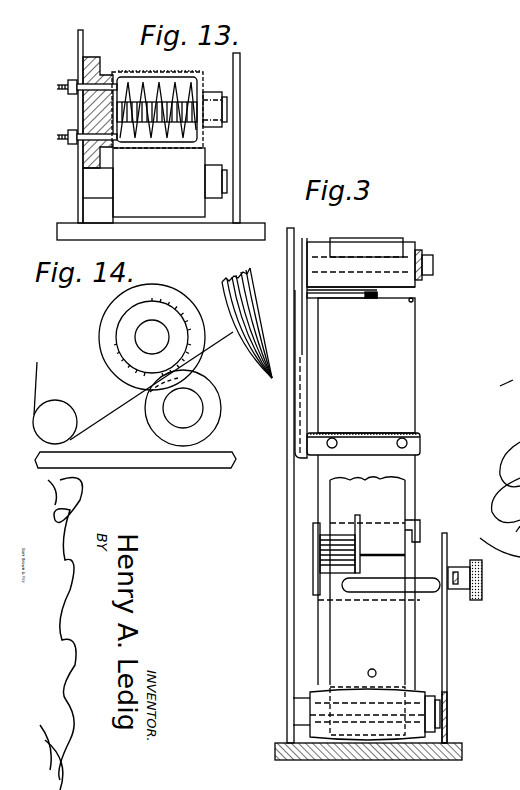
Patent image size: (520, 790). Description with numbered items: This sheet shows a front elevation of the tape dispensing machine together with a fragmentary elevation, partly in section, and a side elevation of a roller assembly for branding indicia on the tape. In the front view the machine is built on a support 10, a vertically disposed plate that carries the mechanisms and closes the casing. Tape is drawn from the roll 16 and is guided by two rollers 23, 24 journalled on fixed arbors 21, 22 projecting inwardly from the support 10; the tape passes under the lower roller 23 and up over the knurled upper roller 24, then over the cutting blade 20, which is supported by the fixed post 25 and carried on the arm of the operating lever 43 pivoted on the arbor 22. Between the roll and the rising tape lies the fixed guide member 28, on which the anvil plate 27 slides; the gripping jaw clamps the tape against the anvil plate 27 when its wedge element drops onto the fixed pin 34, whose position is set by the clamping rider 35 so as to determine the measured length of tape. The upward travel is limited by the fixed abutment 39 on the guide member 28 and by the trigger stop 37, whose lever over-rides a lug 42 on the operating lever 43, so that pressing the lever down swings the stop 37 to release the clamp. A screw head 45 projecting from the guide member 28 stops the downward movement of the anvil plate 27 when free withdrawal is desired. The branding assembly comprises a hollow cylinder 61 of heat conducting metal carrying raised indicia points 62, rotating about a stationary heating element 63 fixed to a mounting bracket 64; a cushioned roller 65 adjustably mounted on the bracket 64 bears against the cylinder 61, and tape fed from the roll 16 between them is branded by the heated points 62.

In FIG. 3, the support 10 is at (288, 524).
In FIG. 14, the roll of tape 16 is at (222, 285).
In FIG. 3, the cutting blade 20 is at (372, 447).
In FIG. 3, the fixed arbor 21 is at (435, 709).
In FIG. 3, the fixed arbor 22 is at (433, 266).
In FIG. 3, the roller 23 is at (425, 727).
In FIG. 3, the roller 24 is at (404, 280).
In FIG. 3, the fixed post 25 is at (333, 433).
In FIG. 3, the anvil plate 27 is at (410, 530).
In FIG. 3, the fixed guide member 28 is at (366, 494).
In FIG. 3, the fixed pin 34 is at (398, 586).
In FIG. 3, the clamping rider 35 is at (458, 592).
In FIG. 3, the trigger stop 37 is at (350, 300).
In FIG. 3, the fixed abutment 39 is at (413, 301).
In FIG. 14, the lug 42 is at (293, 424).
In FIG. 3, the lug 42 is at (301, 348).
In FIG. 3, the operating lever 43 is at (305, 238).
In FIG. 3, the screw head 45 is at (372, 668).
In FIG. 13, the hollow cylinder 61 is at (202, 77).
In FIG. 14, the hollow cylinder 61 is at (125, 338).
In FIG. 13, the raised points 62 is at (127, 71).
In FIG. 14, the raised points 62 is at (178, 311).
In FIG. 13, the stationary heating element 63 is at (160, 140).
In FIG. 13, the mounting bracket 64 is at (78, 187).
In FIG. 13, the cushioned roller 65 is at (170, 182).
In FIG. 14, the cushioned roller 65 is at (160, 429).